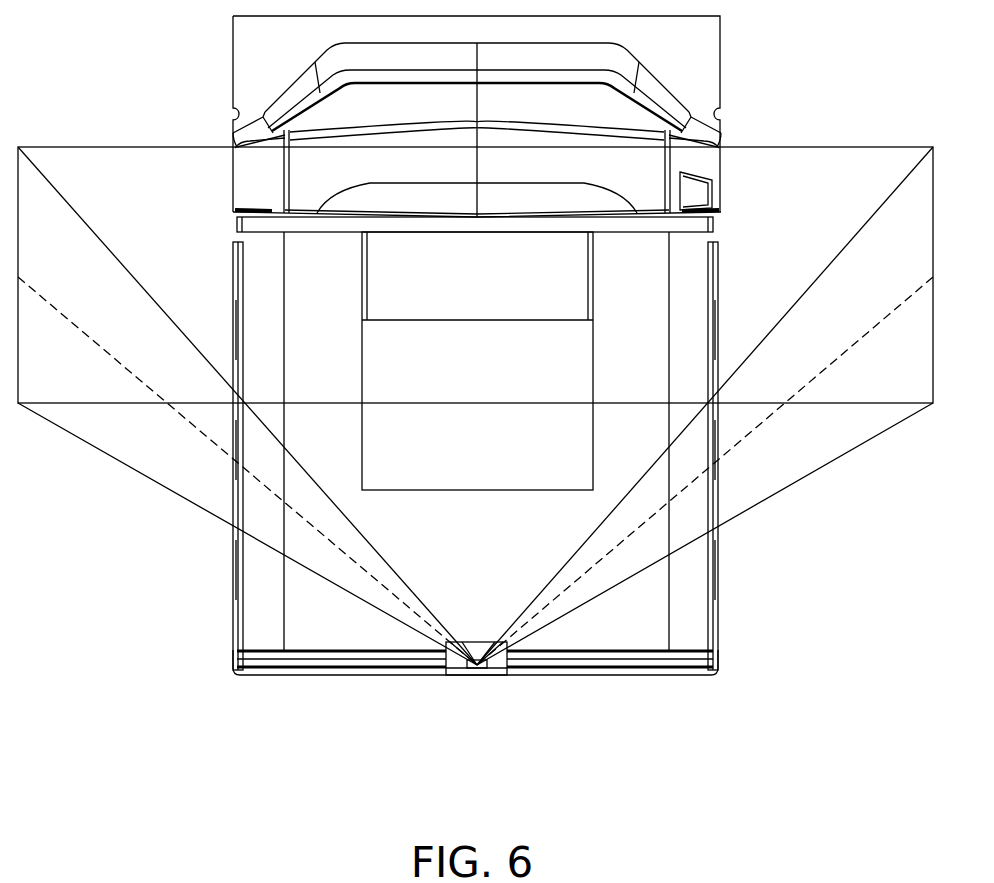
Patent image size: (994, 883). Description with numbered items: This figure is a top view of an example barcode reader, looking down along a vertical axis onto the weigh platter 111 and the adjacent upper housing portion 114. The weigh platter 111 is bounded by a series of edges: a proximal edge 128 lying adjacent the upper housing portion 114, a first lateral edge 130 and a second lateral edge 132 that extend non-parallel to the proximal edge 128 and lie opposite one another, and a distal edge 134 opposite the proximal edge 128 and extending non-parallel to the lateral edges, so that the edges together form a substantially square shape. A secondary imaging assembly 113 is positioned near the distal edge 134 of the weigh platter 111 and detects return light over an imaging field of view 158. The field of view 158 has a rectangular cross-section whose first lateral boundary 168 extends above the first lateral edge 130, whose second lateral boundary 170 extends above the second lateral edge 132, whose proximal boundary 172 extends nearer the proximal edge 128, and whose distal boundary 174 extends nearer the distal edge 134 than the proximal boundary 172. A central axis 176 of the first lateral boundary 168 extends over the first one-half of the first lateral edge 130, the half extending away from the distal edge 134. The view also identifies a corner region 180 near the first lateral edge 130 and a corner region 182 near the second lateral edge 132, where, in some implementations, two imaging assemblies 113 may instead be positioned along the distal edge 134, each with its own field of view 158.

The weigh platter 111 is at (301, 339).
The secondary imaging assembly 113 is at (468, 688).
The upper housing portion 114 is at (720, 152).
The proximal edge 128 is at (626, 232).
The first lateral edge 130 is at (236, 605).
The second lateral edge 132 is at (718, 608).
The distal edge 134 is at (328, 677).
The imaging field of view 158 is at (90, 448).
The first lateral boundary 168 is at (35, 257).
The second lateral boundary 170 is at (871, 269).
The proximal boundary 172 is at (126, 194).
The distal boundary 174 is at (436, 562).
The central axis 176 is at (100, 348).
The corner region 180 is at (218, 678).
The corner region 182 is at (730, 683).